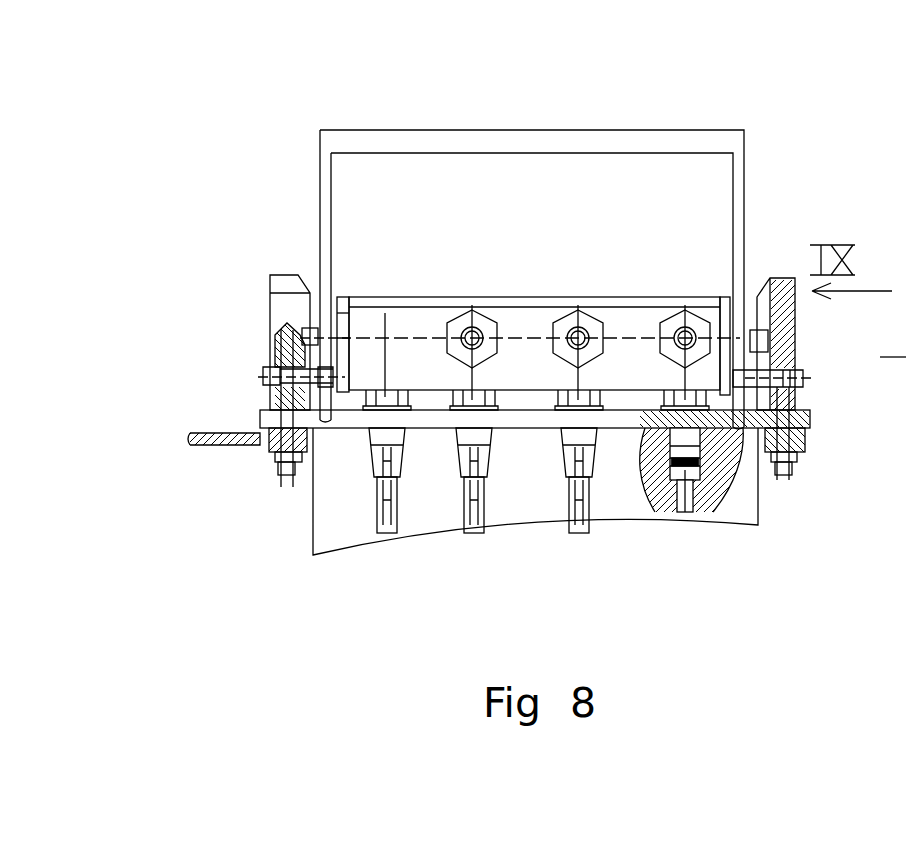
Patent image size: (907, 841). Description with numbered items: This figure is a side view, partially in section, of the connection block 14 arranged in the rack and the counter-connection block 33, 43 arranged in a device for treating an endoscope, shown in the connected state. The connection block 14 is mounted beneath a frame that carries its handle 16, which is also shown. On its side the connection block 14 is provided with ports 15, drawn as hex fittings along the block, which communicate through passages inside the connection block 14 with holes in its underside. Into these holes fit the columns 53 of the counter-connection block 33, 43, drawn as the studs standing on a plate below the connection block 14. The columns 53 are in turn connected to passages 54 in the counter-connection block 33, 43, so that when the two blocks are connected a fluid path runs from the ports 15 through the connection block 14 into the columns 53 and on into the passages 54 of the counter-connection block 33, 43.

The handle 16 is at (582, 143).
The connection block 14 is at (671, 285).
The ports 15 is at (476, 332).
The columns 53 is at (480, 395).
The passages 54 is at (389, 528).
The counter-connection block 33 is at (453, 565).
The counter-connection block 43 is at (303, 546).